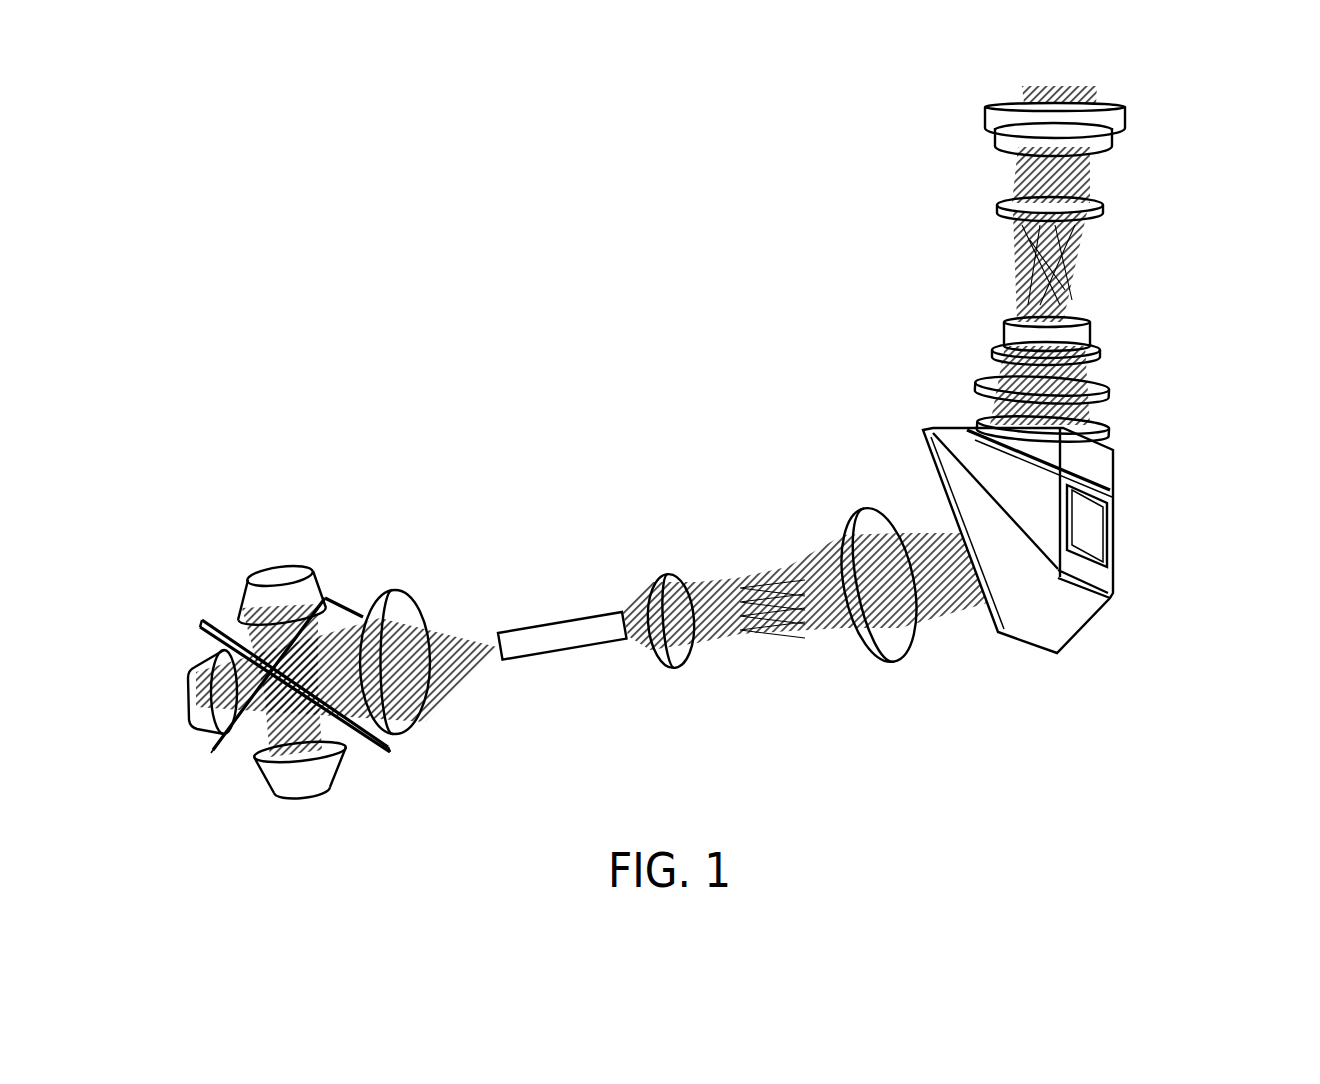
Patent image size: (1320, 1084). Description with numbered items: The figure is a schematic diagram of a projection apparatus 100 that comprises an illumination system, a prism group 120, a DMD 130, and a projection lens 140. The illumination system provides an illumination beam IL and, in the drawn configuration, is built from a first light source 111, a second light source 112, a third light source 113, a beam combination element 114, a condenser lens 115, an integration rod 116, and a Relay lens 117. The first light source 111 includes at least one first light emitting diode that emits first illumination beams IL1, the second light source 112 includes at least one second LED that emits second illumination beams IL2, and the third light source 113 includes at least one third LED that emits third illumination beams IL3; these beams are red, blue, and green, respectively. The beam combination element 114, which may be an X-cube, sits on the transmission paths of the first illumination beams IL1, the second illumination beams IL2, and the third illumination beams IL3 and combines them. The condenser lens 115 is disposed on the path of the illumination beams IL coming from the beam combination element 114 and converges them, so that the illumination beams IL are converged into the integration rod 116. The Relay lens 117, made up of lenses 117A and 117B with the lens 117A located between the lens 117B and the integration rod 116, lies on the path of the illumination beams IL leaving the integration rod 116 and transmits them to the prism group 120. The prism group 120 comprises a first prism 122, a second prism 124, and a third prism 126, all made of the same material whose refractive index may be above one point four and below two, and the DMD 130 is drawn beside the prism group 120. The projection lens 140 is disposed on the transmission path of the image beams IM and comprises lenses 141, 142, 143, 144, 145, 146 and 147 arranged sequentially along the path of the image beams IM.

The projection apparatus 100 is at (692, 460).
The first light source 111 is at (273, 571).
The second light source 112 is at (303, 798).
The third light source 113 is at (183, 690).
The beam combination element 114 is at (363, 732).
The condenser lens 115 is at (408, 610).
The integration rod 116 is at (553, 622).
The Relay lens 117 is at (786, 560).
The lens 117A is at (662, 575).
The lens 117B is at (848, 527).
The prism group 120 is at (951, 483).
The first prism 122 is at (942, 467).
The second prism 124 is at (952, 447).
The third prism 126 is at (960, 436).
The DMD 130 is at (1100, 528).
The projection lens 140 is at (1118, 265).
The lens 141 is at (1093, 437).
The lens 142 is at (1088, 393).
The lens 143 is at (1092, 358).
The lens 144 is at (1077, 333).
The lens 145 is at (1090, 217).
The lens 146 is at (1093, 155).
The lens 147 is at (1094, 146).
The illumination beam IL is at (950, 603).
The first illumination beams IL1 is at (250, 630).
The second illumination beams IL2 is at (263, 737).
The third illumination beams IL3 is at (217, 665).
The image beams IM is at (997, 437).